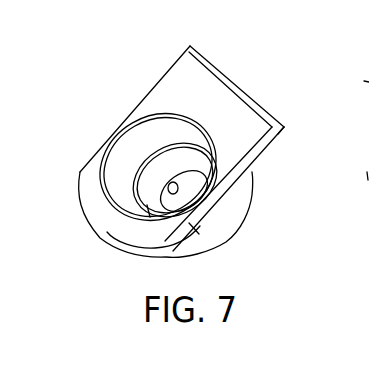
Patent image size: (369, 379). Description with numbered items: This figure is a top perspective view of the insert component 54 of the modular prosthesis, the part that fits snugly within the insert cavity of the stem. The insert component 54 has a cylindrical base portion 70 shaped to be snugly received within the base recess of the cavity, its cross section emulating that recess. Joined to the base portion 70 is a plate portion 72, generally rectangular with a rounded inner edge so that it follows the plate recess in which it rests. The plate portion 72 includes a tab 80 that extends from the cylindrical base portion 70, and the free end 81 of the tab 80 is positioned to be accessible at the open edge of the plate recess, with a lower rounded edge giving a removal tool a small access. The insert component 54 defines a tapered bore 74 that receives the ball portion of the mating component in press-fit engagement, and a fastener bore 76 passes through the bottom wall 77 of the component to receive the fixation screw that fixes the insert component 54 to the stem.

The insert component 54 is at (201, 140).
The base portion 70 is at (228, 214).
The plate portion 72 is at (257, 151).
The tapered bore 74 is at (133, 155).
The fastener bore 76 is at (170, 206).
The bottom wall 77 is at (106, 236).
The tab 80 is at (183, 88).
The free end 81 is at (222, 70).